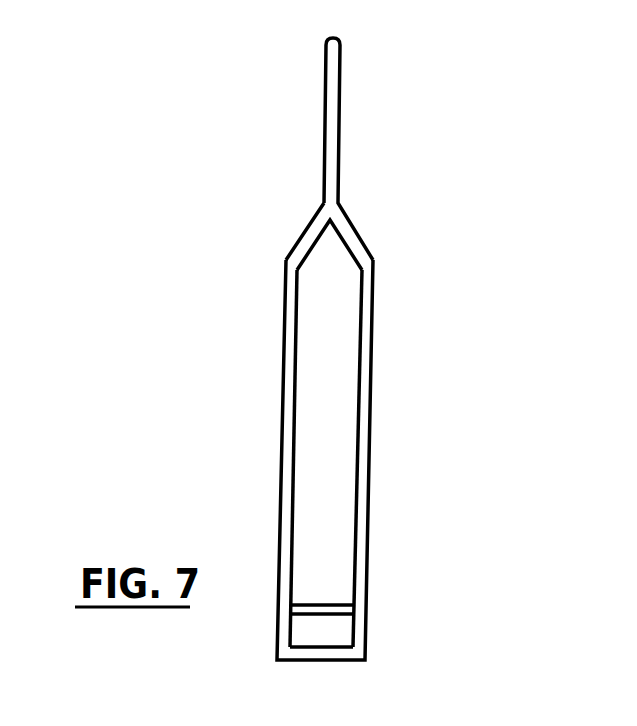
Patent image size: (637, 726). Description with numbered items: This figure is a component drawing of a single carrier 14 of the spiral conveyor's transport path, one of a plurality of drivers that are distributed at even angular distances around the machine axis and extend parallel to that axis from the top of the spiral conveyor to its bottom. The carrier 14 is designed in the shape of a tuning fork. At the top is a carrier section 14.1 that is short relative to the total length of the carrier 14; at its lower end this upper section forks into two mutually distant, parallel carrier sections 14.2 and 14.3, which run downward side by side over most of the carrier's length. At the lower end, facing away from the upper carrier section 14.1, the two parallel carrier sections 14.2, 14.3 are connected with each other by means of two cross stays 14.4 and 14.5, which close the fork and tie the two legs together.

The carrier 14 is at (390, 189).
The carrier section 14.1 is at (339, 97).
The carrier section 14.2 is at (290, 419).
The carrier section 14.3 is at (360, 419).
The cross stay 14.4 is at (337, 572).
The cross stay 14.5 is at (335, 627).